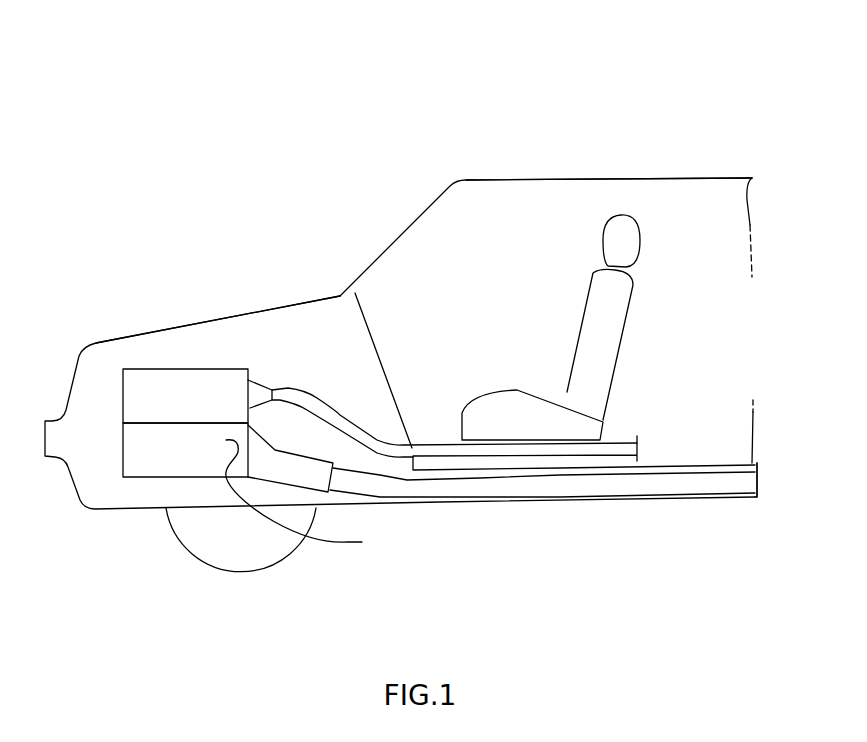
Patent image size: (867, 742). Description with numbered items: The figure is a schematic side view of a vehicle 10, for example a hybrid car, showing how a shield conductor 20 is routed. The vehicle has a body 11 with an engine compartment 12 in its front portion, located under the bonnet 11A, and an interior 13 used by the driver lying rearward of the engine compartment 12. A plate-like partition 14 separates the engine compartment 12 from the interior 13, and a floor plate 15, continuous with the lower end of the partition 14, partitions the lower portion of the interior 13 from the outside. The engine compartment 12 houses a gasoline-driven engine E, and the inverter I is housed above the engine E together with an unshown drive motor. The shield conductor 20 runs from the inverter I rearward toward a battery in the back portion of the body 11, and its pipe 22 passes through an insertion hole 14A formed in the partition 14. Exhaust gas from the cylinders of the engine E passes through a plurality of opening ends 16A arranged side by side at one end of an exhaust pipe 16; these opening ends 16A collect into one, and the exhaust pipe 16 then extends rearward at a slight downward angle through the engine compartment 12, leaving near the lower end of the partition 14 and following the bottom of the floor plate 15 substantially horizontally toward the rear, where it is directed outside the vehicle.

The vehicle 10 is at (400, 278).
The body 11 is at (400, 305).
The bonnet 11A is at (257, 313).
The interior 13 is at (585, 178).
The partition 14 is at (371, 337).
The insertion hole 14A is at (413, 456).
The engine compartment 12 is at (234, 505).
The inverter I is at (165, 368).
The engine E is at (150, 477).
The shield conductor 20 is at (338, 395).
The pipe 22 is at (388, 448).
The exhaust pipe 16 is at (638, 498).
The opening ends 16A is at (313, 497).
The floor plate 15 is at (743, 466).